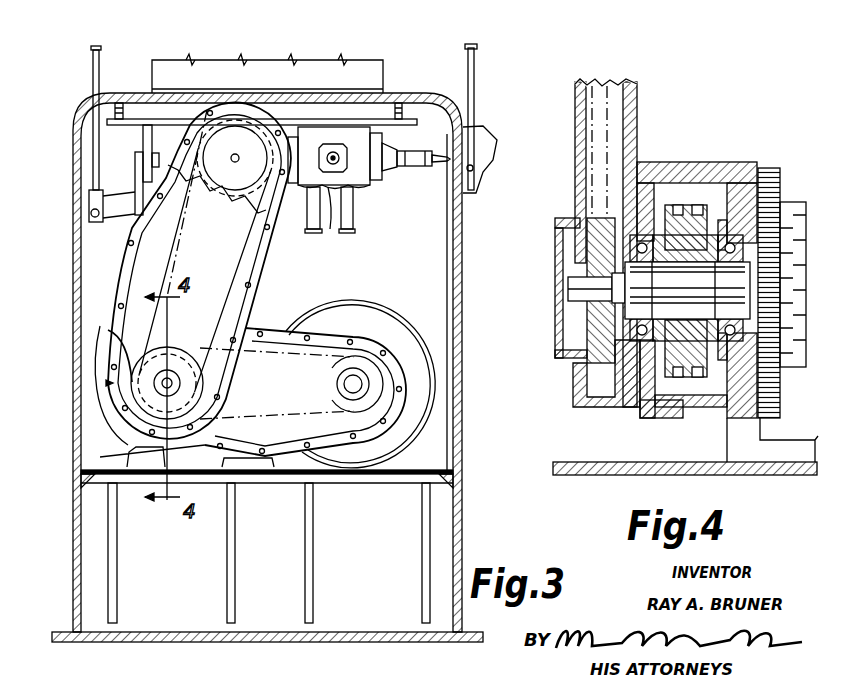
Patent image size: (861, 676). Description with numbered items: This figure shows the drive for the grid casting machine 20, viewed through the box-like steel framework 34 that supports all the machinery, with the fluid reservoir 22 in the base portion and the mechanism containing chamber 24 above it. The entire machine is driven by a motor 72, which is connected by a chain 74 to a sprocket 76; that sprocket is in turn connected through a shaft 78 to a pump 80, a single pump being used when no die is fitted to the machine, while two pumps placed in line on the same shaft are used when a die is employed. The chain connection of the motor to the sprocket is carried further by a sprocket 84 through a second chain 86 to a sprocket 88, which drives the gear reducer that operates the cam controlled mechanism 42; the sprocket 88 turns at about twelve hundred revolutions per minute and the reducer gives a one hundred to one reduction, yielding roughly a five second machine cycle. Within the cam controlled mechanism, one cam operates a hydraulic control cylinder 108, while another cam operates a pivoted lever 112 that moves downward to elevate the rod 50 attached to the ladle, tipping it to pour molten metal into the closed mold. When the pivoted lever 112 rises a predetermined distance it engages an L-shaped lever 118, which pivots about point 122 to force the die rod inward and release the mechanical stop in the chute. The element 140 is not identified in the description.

In FIG. 3, the grid casting machine 20 is at (75, 450).
In FIG. 3, the fluid reservoir 22 is at (455, 512).
In FIG. 3, the mechanism containing chamber 24 is at (452, 310).
In FIG. 3, the steel framework 34 is at (462, 218).
In FIG. 3, the cam controlled mechanism 42 is at (399, 200).
In FIG. 3, the rod 50 is at (96, 47).
In FIG. 3, the motor 72 is at (385, 304).
In FIG. 3, the chain 74 is at (278, 419).
In FIG. 3, the sprocket 76 is at (178, 350).
In FIG. 4, the sprocket 76 is at (701, 203).
In FIG. 4, the shaft 78 is at (757, 297).
In FIG. 3, the pump 80 is at (93, 391).
In FIG. 4, the pump 80 is at (792, 204).
In FIG. 3, the sprocket 84 is at (110, 350).
In FIG. 4, the sprocket 84 is at (583, 222).
In FIG. 3, the chain 86 is at (181, 232).
In FIG. 4, the chain 86 is at (615, 84).
In FIG. 3, the sprocket 88 is at (235, 180).
In FIG. 3, the hydraulic control cylinder 108 is at (330, 222).
In FIG. 3, the pivoted lever 112 is at (110, 224).
In FIG. 3, the L-shaped lever 118 is at (137, 158).
In FIG. 3, the pivot point 122 is at (182, 152).
In FIG. 3, the lever rod 140 is at (477, 126).